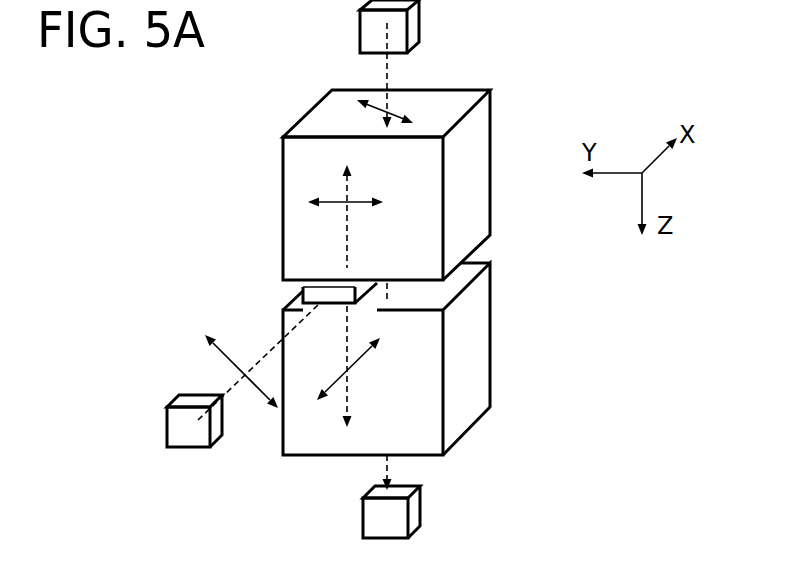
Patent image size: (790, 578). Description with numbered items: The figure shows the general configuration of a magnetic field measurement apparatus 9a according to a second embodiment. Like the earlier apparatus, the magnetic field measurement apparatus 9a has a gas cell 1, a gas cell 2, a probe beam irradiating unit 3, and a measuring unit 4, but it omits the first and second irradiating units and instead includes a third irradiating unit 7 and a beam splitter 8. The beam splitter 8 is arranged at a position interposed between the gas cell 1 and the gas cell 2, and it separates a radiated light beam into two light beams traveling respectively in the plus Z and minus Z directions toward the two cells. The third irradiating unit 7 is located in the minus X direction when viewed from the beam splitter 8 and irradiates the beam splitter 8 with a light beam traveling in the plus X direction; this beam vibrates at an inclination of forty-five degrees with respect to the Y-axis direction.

The gas cell 1 is at (477, 172).
The gas cell 2 is at (477, 323).
The probe beam irradiating unit 3 is at (412, 27).
The measuring unit 4 is at (412, 515).
The third irradiating unit 7 is at (167, 418).
The beam splitter 8 is at (303, 290).
The magnetic field measurement apparatus 9a is at (581, 460).